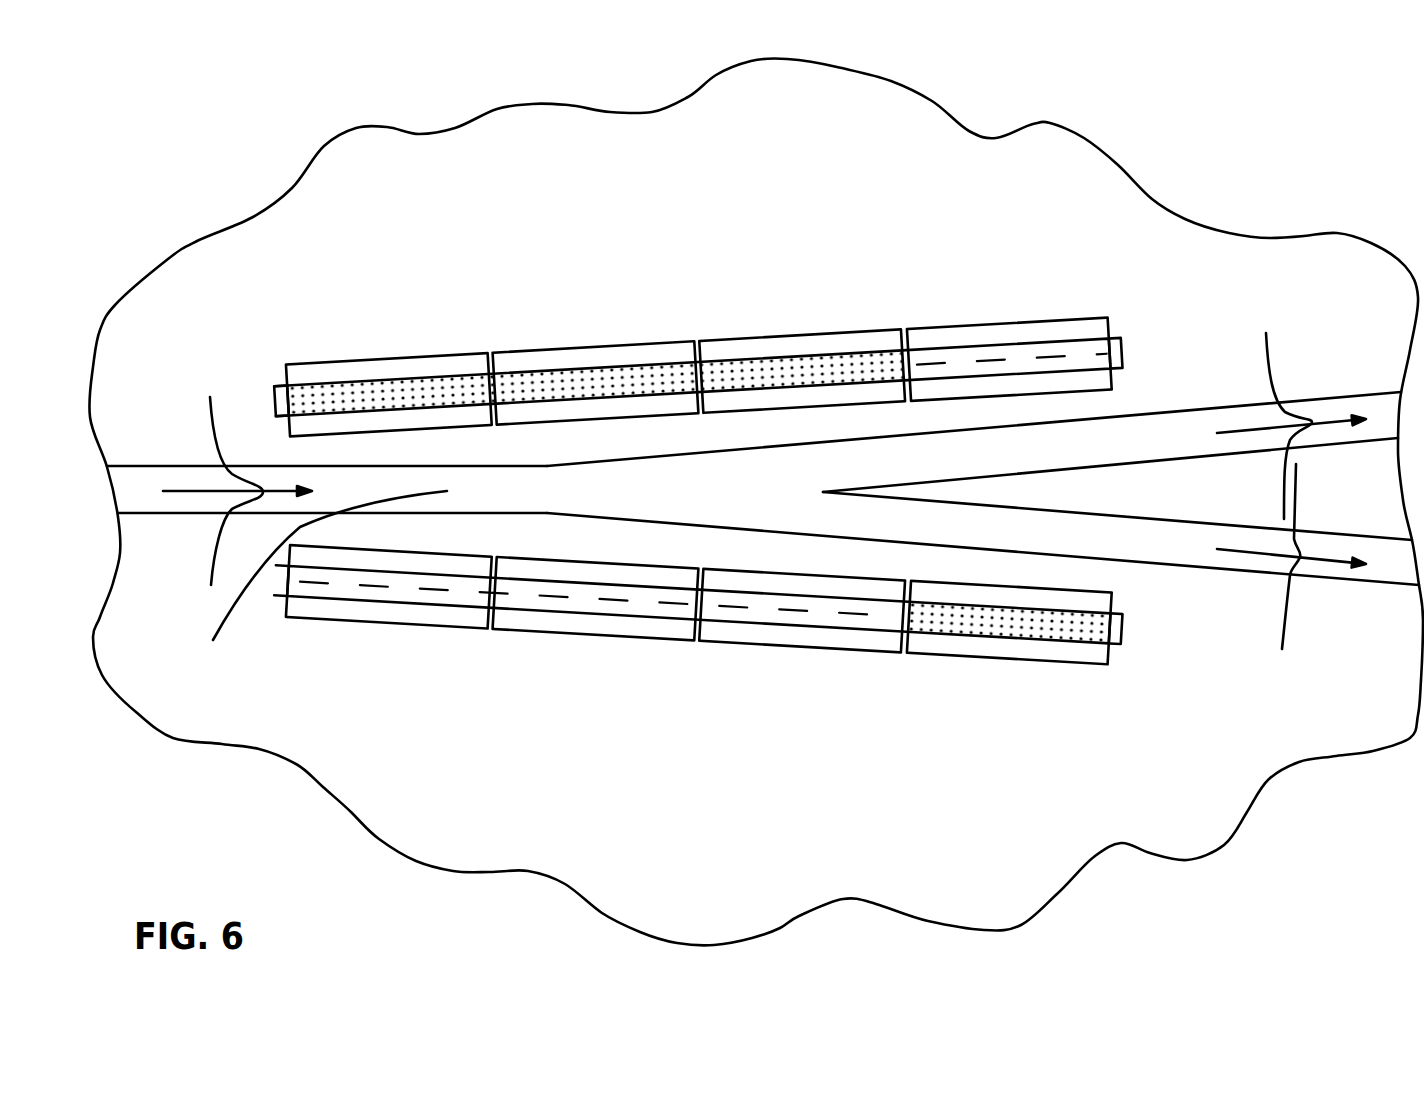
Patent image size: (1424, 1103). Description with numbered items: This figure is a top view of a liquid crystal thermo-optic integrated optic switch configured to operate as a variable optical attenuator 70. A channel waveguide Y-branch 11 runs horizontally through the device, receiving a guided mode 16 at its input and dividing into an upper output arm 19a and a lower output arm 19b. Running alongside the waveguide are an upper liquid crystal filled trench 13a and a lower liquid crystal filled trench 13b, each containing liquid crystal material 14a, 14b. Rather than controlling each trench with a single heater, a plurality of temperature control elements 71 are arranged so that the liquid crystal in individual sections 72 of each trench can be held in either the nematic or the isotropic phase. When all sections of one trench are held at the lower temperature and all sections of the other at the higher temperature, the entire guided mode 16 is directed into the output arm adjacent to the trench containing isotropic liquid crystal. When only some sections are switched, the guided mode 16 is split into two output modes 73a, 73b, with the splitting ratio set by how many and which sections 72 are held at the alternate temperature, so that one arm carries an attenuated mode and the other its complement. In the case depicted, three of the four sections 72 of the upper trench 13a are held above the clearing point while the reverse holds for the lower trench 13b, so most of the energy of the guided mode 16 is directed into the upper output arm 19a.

The Y-branch 11 is at (327, 579).
The upper liquid crystal filled trench 13a is at (272, 400).
The lower liquid crystal filled trench 13b is at (1124, 628).
The liquid crystal material in upper trench 14a is at (967, 361).
The liquid crystal material in lower trench 14b is at (814, 371).
The guided mode 16 is at (207, 418).
The upper output arm 19a is at (1128, 440).
The lower output arm 19b is at (1128, 540).
The variable optical attenuator 70 is at (591, 282).
The temperature control elements 71 is at (1008, 656).
The sections 72 is at (388, 378).
The first output mode 73a is at (1280, 369).
The second output mode 73b is at (1291, 617).